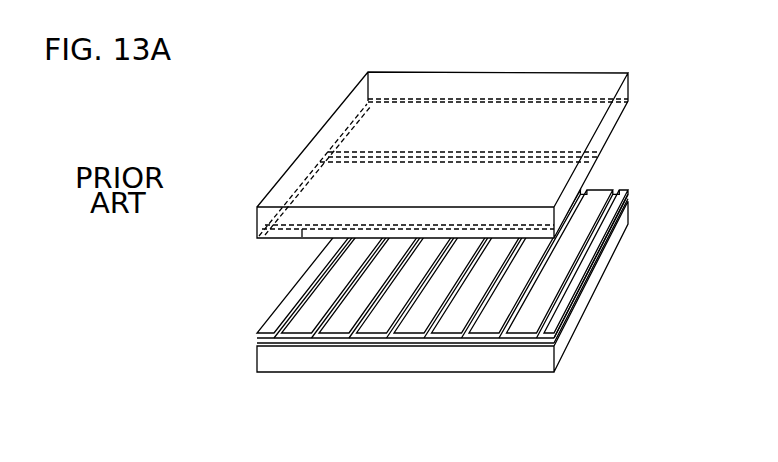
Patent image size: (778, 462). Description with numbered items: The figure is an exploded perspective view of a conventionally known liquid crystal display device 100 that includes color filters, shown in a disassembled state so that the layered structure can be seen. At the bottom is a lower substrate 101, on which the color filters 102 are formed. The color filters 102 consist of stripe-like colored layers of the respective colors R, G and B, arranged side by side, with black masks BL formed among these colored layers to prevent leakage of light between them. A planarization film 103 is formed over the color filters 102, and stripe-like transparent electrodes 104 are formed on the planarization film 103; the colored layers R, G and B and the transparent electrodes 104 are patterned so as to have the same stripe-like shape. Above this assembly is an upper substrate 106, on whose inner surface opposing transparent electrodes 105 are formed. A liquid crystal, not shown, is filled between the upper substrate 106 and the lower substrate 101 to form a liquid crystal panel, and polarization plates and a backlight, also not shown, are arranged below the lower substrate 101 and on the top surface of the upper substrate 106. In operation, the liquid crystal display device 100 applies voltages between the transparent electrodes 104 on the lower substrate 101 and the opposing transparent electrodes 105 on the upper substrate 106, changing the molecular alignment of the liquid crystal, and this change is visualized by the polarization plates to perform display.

The liquid crystal display device 100 is at (374, 58).
The lower substrate 101 is at (575, 312).
The color filters 102 is at (545, 345).
The planarization film 103 is at (561, 286).
The transparent electrodes 104 is at (472, 300).
The opposing transparent electrodes 105 is at (597, 168).
The upper substrate 106 is at (603, 130).
The red colored layer R is at (290, 348).
The green colored layer G is at (332, 348).
The blue colored layer B is at (370, 348).
The black masks BL is at (312, 348).